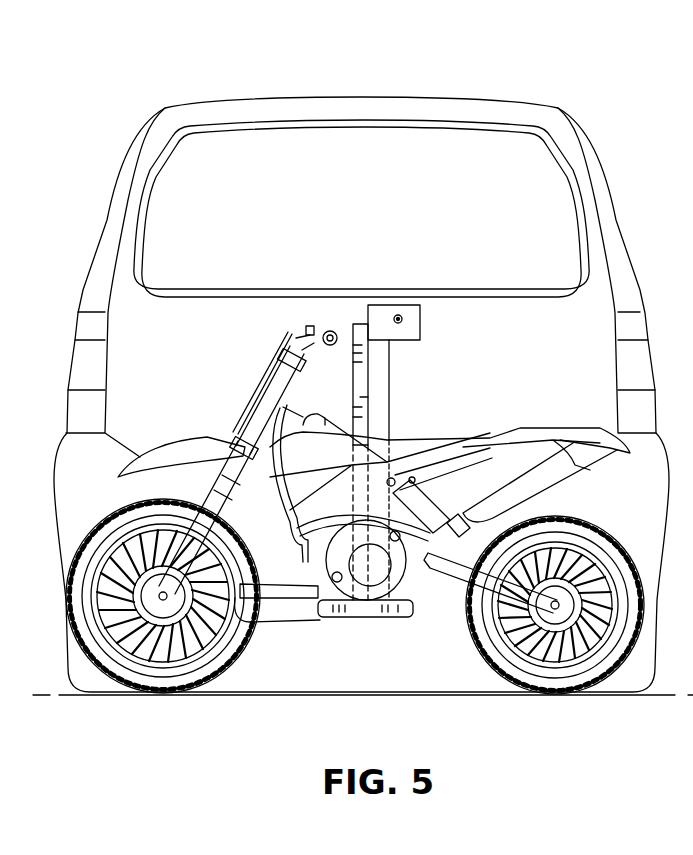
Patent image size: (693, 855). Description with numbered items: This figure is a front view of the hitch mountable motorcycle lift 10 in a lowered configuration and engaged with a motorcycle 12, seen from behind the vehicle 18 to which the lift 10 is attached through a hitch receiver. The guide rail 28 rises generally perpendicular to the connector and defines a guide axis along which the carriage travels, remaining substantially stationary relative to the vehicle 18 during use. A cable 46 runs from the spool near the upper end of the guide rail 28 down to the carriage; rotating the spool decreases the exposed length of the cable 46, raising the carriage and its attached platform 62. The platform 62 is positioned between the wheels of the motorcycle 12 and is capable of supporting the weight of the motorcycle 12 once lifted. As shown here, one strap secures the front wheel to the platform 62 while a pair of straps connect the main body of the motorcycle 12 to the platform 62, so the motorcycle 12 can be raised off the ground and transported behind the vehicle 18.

The vehicle 18 is at (229, 94).
The motorcycle 12 is at (231, 379).
The hitch mountable motorcycle lift 10 is at (448, 315).
The guide rail 28 is at (351, 323).
The cable 46 is at (392, 385).
The platform 62 is at (365, 625).